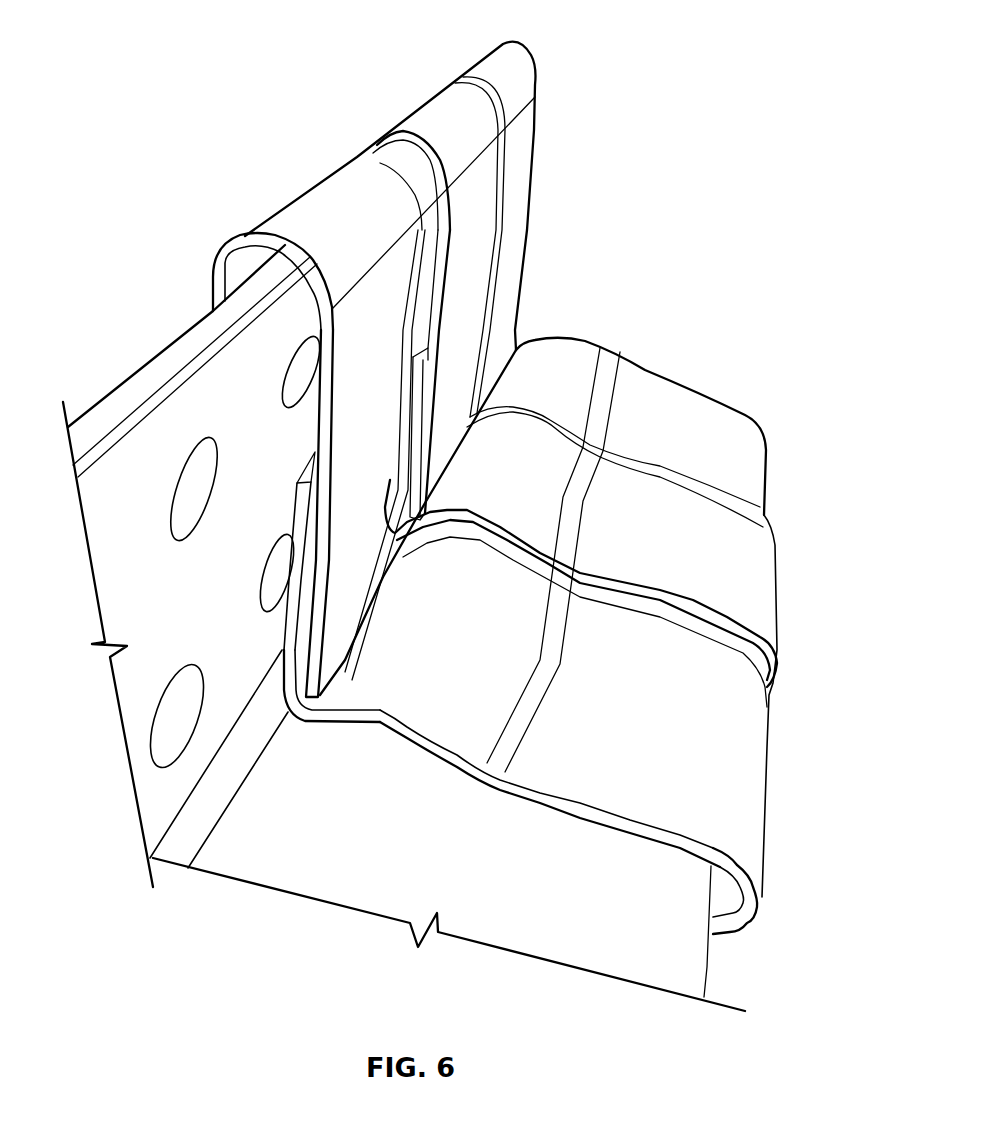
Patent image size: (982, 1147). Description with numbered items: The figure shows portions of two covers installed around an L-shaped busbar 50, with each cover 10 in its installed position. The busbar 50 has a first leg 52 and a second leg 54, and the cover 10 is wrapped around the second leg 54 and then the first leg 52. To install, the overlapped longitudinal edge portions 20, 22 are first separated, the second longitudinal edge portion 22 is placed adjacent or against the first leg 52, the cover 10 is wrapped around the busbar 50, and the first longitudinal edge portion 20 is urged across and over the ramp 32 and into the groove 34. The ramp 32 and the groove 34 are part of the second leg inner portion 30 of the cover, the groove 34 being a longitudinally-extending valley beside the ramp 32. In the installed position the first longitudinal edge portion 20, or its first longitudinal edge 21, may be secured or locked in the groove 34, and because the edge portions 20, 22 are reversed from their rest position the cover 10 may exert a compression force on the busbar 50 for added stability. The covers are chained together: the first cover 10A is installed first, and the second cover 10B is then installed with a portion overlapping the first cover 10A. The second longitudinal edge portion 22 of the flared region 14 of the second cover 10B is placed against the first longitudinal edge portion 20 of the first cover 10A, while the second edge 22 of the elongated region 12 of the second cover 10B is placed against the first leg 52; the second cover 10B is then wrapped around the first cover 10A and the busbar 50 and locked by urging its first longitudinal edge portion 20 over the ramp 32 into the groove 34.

The cover 10 is at (523, 501).
The first cover 10A is at (625, 845).
The second cover 10B is at (619, 355).
The elongated region 12 is at (534, 97).
The flared region 14 is at (448, 135).
The first longitudinal edge portion 20 is at (520, 208).
The first longitudinal edge 21 is at (298, 718).
The second longitudinal edge portion 22 is at (413, 407).
The second leg inner portion 30 is at (550, 766).
The ramp 32 is at (379, 717).
The groove 34 is at (526, 334).
The busbar 50 is at (103, 341).
The first leg 52 is at (200, 598).
The second leg 54 is at (422, 820).